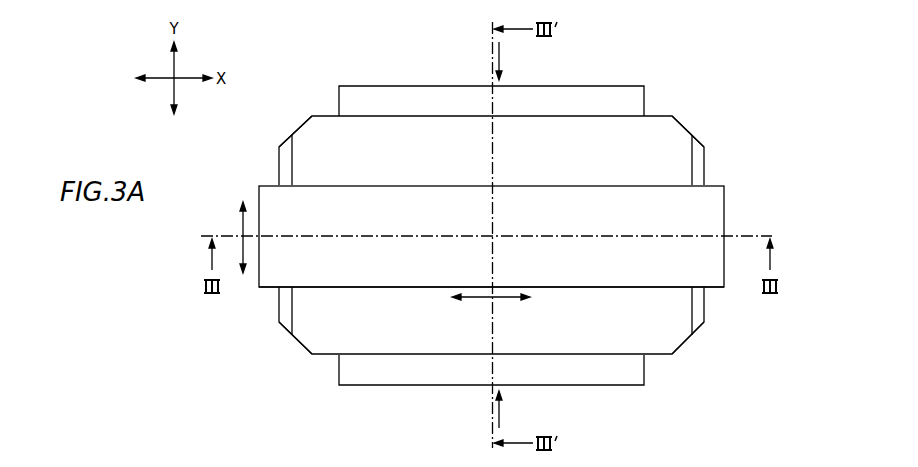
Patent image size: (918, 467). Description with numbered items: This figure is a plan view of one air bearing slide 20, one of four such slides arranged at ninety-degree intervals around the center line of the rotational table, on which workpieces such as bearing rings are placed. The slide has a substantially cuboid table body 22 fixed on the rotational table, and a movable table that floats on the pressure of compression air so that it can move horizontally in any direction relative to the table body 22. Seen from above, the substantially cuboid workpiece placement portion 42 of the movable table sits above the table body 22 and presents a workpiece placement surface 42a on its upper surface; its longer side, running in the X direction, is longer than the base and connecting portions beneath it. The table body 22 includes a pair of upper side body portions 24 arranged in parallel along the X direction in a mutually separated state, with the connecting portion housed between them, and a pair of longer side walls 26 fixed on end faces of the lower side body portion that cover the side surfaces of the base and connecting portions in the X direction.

The air bearing slide 20 is at (607, 80).
The table body 22 is at (684, 120).
The upper side body portion 24 is at (317, 137).
The longer side wall 26 is at (287, 309).
The workpiece placement portion 42 is at (715, 200).
The workpiece placement surface 42a is at (633, 270).